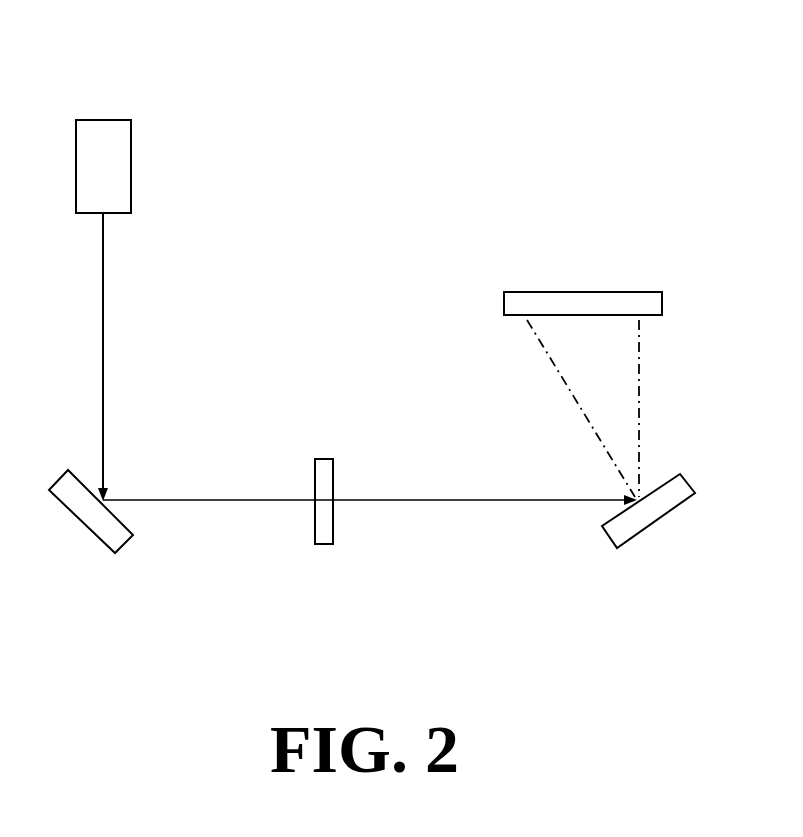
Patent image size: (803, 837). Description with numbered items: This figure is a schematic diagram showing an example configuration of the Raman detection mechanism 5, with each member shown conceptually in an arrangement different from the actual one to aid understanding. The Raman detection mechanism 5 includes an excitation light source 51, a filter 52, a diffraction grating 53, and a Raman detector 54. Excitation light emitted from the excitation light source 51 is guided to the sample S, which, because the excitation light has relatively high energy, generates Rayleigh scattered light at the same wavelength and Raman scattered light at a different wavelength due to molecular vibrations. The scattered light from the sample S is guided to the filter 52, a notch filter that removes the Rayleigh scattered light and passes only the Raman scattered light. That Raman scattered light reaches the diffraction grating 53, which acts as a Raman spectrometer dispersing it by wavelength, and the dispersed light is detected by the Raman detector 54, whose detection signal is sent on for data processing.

The Raman detection mechanism 5 is at (374, 106).
The excitation light source 51 is at (107, 120).
The filter 52 is at (323, 545).
The diffraction grating 53 is at (653, 525).
The Raman detector 54 is at (583, 292).
The sample S is at (83, 522).